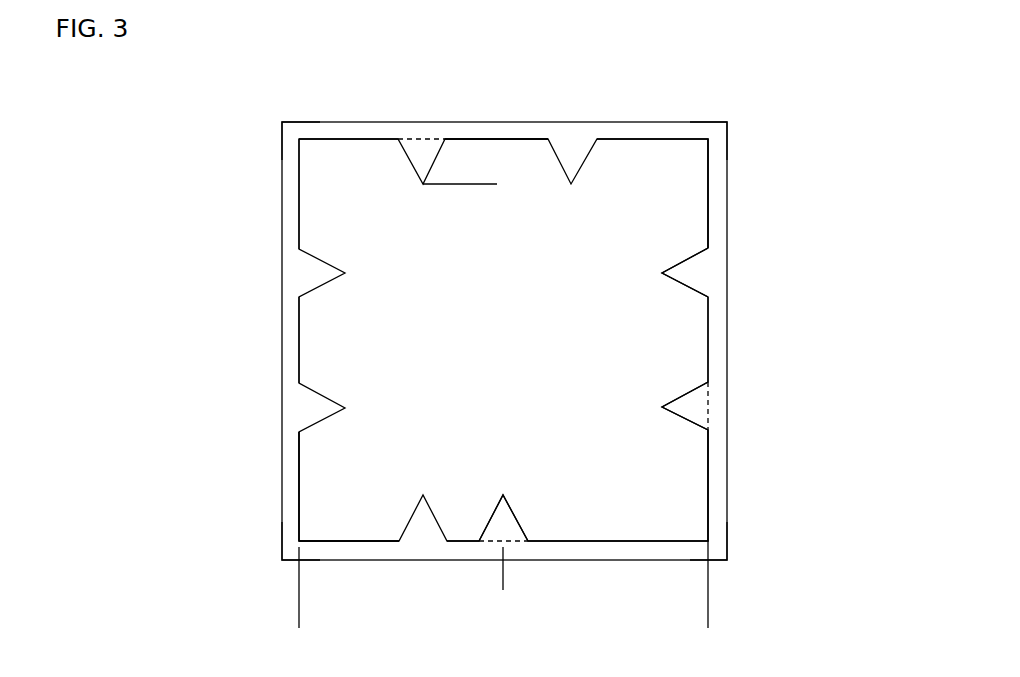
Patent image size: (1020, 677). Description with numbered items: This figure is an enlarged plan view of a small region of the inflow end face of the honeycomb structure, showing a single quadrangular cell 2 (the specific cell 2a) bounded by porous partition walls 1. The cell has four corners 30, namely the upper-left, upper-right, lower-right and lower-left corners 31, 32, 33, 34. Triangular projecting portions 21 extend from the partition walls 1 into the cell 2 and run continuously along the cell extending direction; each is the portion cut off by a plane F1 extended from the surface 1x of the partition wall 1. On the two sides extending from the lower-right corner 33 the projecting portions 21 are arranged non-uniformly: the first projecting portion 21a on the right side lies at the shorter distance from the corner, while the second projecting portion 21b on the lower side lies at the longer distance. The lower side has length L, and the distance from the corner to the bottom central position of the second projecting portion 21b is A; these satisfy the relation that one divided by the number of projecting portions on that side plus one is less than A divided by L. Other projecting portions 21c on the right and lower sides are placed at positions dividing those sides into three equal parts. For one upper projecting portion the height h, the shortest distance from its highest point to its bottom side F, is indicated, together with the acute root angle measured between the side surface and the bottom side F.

The partition wall 1 is at (287, 437).
The surface of the partition wall 1x is at (708, 455).
The cell 2 is at (437, 340).
The cell 2a is at (352, 331).
The projecting portion 21 is at (649, 433).
The first projecting portion 21a is at (688, 402).
The second projecting portion 21b is at (503, 517).
The projecting portion 21c is at (690, 268).
The corner 30 is at (504, 335).
The corner 31 is at (292, 133).
The corner 32 is at (713, 132).
The corner 33 is at (715, 546).
The corner 34 is at (288, 548).
The bottom side F is at (769, 413).
The plane F1 is at (708, 402).
The height of the projecting portion h is at (467, 141).
The distance A is at (707, 577).
The length of the side L is at (300, 619).